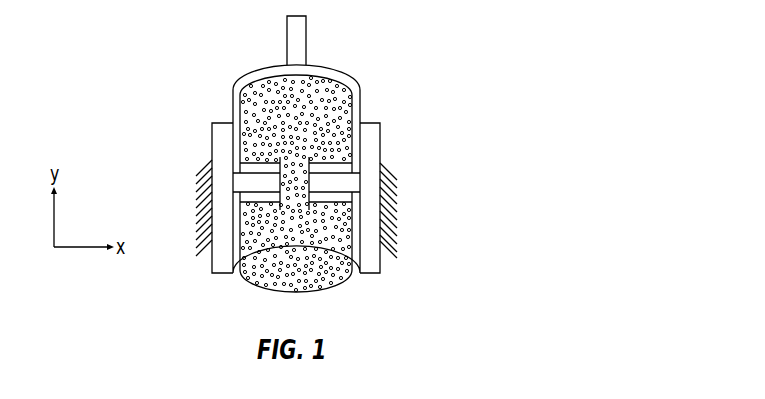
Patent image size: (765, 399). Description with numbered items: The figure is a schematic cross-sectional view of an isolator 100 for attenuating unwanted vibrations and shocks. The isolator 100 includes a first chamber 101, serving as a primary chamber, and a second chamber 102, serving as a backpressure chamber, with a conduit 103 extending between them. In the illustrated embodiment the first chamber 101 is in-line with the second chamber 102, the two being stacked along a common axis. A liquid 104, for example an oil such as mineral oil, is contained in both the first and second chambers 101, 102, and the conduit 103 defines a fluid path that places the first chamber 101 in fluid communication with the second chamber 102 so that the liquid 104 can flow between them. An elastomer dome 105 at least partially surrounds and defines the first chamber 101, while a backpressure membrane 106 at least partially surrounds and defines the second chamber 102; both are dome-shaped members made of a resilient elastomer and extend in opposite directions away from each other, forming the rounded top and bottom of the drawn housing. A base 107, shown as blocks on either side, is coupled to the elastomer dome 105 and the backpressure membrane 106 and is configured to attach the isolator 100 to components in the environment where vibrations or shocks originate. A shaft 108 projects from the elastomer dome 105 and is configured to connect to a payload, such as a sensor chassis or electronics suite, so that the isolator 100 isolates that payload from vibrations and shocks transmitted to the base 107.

The isolator 100 is at (429, 39).
The first chamber 101 is at (298, 118).
The second chamber 102 is at (300, 253).
The conduit 103 is at (292, 182).
The liquid 104 is at (252, 238).
The elastomer dome 105 is at (268, 72).
The backpressure membrane 106 is at (267, 296).
The base 107 is at (221, 262).
The shaft 108 is at (296, 41).